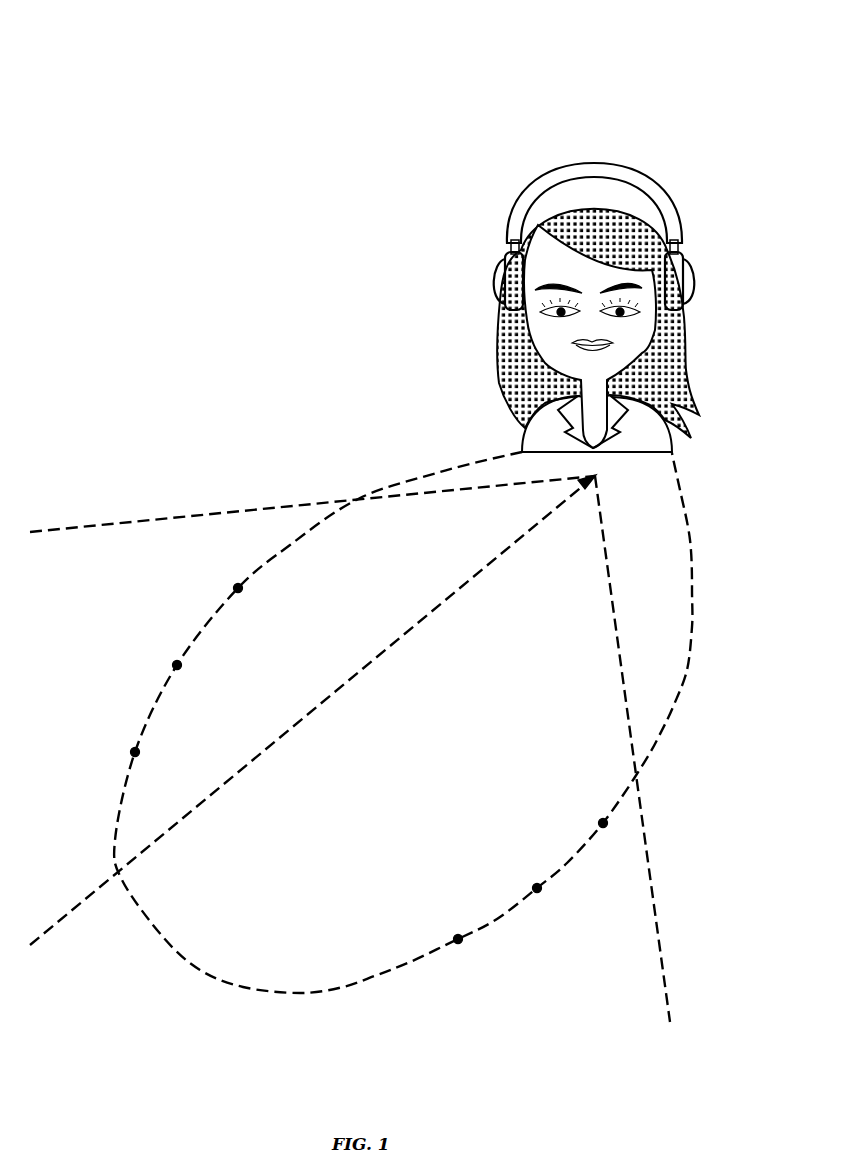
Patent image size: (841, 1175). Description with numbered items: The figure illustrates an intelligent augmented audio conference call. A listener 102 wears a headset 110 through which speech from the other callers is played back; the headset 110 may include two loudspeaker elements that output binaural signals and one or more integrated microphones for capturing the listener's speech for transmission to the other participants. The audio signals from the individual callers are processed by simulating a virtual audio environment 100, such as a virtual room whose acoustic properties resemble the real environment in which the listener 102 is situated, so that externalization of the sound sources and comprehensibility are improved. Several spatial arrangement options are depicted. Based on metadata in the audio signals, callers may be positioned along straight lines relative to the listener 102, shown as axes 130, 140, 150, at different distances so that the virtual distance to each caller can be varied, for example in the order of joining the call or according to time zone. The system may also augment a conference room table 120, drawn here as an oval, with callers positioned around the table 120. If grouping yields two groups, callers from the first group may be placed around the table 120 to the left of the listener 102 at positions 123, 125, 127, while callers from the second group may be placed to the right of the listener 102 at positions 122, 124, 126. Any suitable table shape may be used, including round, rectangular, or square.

The virtual audio environment 100 is at (112, 107).
The listener 102 is at (470, 378).
The headset 110 is at (492, 285).
The conference room table 120 is at (332, 988).
The position 122 is at (135, 752).
The position 123 is at (458, 939).
The position 124 is at (177, 665).
The position 125 is at (537, 888).
The position 126 is at (238, 588).
The position 127 is at (603, 823).
The axis 130 is at (70, 910).
The axis 140 is at (662, 967).
The axis 150 is at (68, 530).